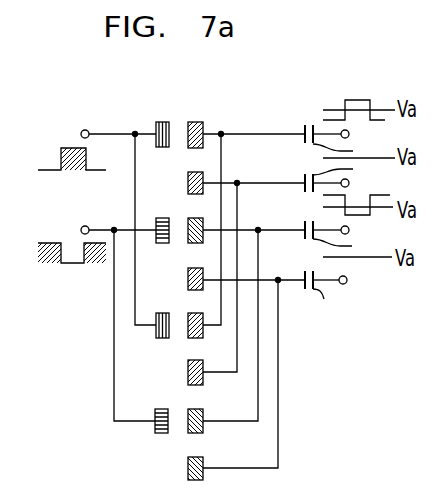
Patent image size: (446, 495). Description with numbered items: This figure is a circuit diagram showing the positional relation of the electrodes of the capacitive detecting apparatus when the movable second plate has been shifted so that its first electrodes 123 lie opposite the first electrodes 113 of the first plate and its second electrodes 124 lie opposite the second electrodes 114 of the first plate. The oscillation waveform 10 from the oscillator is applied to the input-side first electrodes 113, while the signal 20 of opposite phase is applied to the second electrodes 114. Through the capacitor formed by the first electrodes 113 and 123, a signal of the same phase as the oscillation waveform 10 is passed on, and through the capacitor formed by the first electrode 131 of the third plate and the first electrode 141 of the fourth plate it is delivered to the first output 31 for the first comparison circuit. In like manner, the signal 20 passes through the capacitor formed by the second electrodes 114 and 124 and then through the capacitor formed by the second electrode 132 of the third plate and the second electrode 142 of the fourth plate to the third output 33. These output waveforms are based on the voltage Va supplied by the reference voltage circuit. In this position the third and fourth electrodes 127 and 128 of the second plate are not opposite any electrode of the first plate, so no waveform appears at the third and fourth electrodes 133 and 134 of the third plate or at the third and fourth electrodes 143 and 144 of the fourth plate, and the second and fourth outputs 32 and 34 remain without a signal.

The oscillation waveform 10 is at (85, 130).
The signal of opposite phase 20 is at (85, 226).
The first electrodes of the first plate 113 is at (163, 122).
The second electrodes of the first plate 114 is at (163, 218).
The first electrodes of the second plate 123 is at (195, 122).
The second electrodes of the second plate 124 is at (204, 431).
The third electrodes of the second plate 127 is at (183, 372).
The fourth electrodes of the second plate 128 is at (188, 466).
The first electrode of the third plate 131 is at (305, 127).
The second electrode of the third plate 132 is at (305, 223).
The third electrode of the third plate 133 is at (305, 176).
The fourth electrode of the third plate 134 is at (305, 274).
The first electrode of the fourth plate 141 is at (345, 149).
The second electrode of the fourth plate 142 is at (350, 244).
The third electrode of the fourth plate 143 is at (347, 170).
The fourth electrode of the fourth plate 144 is at (335, 306).
The first output 31 is at (349, 134).
The second output 32 is at (349, 183).
The third output 33 is at (349, 230).
The fourth output 34 is at (347, 280).